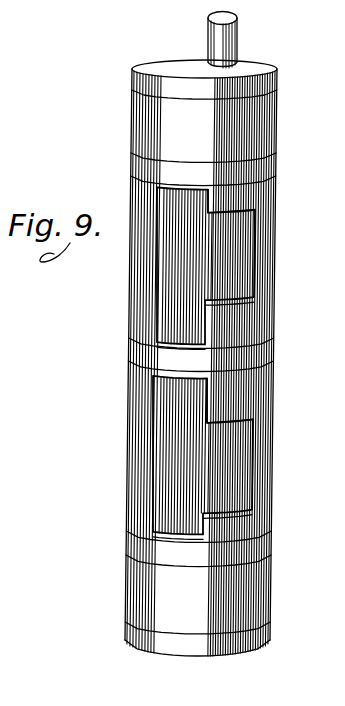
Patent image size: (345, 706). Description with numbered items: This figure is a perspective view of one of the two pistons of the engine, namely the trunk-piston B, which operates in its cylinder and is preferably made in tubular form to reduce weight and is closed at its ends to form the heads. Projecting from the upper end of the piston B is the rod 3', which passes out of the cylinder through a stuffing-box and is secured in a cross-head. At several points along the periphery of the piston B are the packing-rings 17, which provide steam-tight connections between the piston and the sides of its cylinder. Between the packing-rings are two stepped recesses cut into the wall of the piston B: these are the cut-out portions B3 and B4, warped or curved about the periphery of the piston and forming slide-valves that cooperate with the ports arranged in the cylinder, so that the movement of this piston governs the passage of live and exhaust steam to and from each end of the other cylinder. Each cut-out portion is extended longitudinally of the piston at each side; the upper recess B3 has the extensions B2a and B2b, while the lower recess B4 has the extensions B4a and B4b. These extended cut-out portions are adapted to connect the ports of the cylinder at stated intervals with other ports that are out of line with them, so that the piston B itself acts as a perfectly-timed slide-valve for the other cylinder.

The piston rod 3' is at (245, 40).
The packing-rings 17 is at (184, 94).
The trunk-piston B is at (201, 358).
The longitudinal extension of cut-out portion B2a is at (210, 204).
The cut-out portion B3 is at (206, 265).
The longitudinal extension of cut-out portion B2b is at (205, 325).
The longitudinal extension of cut-out portion B4a is at (208, 401).
The cut-out portion B4 is at (203, 455).
The longitudinal extension of cut-out portion B4b is at (202, 519).